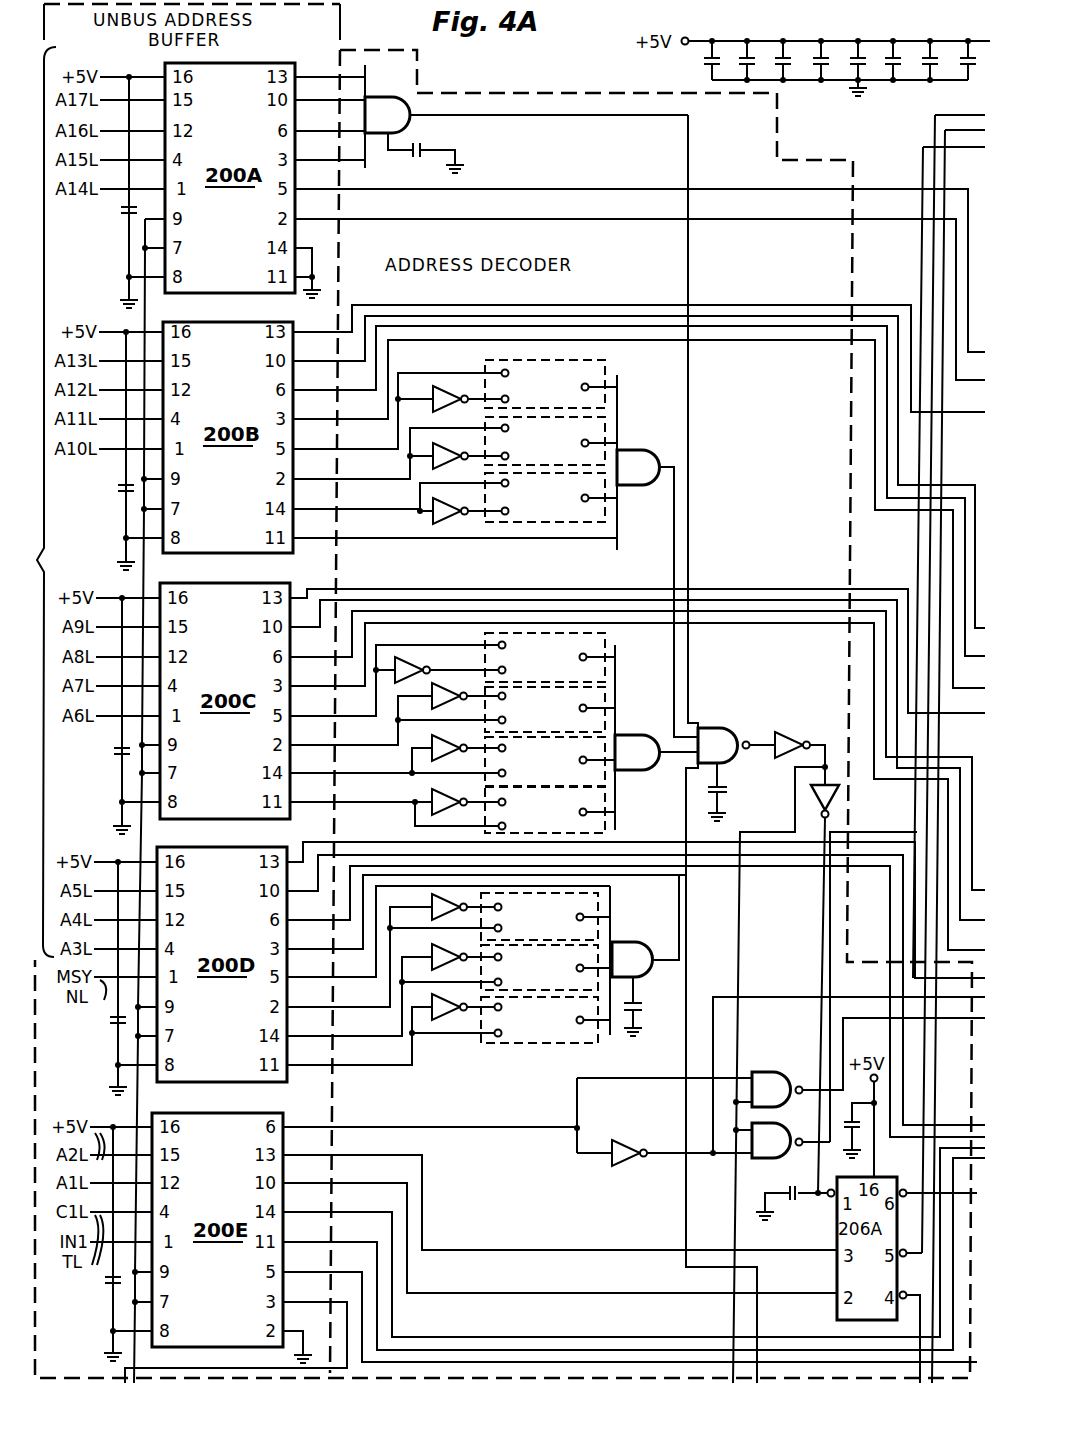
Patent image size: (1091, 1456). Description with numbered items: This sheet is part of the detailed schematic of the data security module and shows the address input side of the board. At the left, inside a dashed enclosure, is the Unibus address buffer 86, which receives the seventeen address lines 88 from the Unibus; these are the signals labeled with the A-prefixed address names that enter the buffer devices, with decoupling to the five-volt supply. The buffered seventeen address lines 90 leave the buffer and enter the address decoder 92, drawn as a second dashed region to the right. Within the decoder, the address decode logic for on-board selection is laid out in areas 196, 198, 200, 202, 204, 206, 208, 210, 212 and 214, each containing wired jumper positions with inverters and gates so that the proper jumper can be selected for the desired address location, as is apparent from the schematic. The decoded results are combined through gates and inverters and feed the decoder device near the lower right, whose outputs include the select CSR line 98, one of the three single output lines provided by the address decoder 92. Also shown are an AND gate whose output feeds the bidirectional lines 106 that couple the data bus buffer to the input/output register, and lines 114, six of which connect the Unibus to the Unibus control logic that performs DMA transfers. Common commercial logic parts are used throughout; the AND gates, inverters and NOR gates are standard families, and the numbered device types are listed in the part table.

The Unibus address buffer 86 is at (343, 12).
The address lines 88 is at (100, 1127).
The address lines out of the address buffer 90 is at (356, 462).
The address decoder 92 is at (518, 93).
The select CSR line 98 is at (922, 1175).
The bidirectional lines 106 is at (328, 86).
The lines connecting the Unibus to the Unibus control logic 114 is at (93, 1154).
The address decode logic area 196 is at (600, 374).
The address decode logic area 198 is at (600, 430).
The address decode logic area 200 is at (567, 513).
The address decode logic area 202 is at (598, 656).
The address decode logic area 204 is at (596, 710).
The address decode logic area 206 is at (598, 774).
The address decode logic area 208 is at (598, 826).
The address decode logic area 210 is at (595, 912).
The address decode logic area 212 is at (588, 956).
The address decode logic area 214 is at (537, 1043).